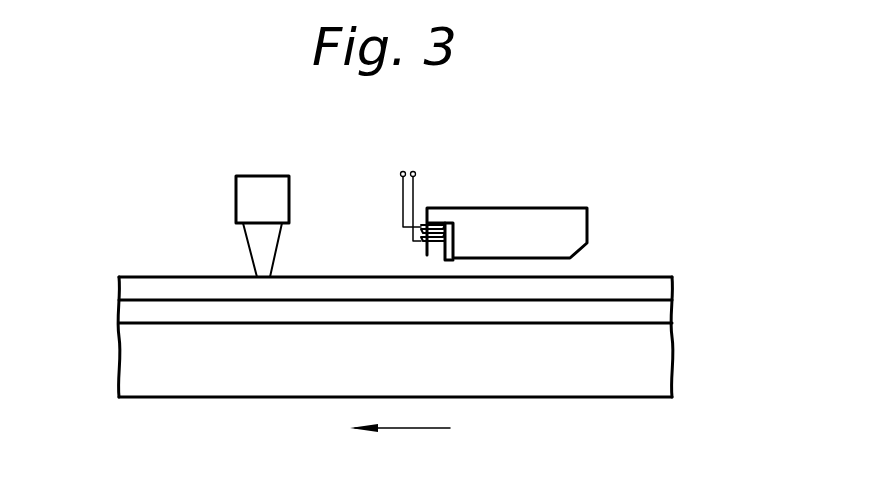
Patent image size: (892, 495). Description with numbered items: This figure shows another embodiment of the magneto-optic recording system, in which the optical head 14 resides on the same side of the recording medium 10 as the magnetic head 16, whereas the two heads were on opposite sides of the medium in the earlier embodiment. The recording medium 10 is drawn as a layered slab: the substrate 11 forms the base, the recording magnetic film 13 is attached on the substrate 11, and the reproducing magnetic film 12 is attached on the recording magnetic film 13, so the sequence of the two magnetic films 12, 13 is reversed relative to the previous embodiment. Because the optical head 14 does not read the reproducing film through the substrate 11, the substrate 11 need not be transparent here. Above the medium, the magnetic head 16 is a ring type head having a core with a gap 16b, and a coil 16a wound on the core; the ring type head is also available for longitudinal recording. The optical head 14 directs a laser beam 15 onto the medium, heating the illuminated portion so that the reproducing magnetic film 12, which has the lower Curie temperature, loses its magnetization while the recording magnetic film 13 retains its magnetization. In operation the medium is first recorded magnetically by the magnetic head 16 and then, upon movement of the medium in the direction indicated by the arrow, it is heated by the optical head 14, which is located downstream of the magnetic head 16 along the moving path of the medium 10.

The recording medium 10 is at (93, 277).
The substrate 11 is at (660, 363).
The reproducing magnetic film 12 is at (660, 291).
The recording magnetic film 13 is at (660, 313).
The optical head 14 is at (243, 196).
The laser beam 15 is at (248, 243).
The magnetic head 16 is at (532, 220).
The coil 16a is at (431, 191).
The gap 16b is at (446, 261).